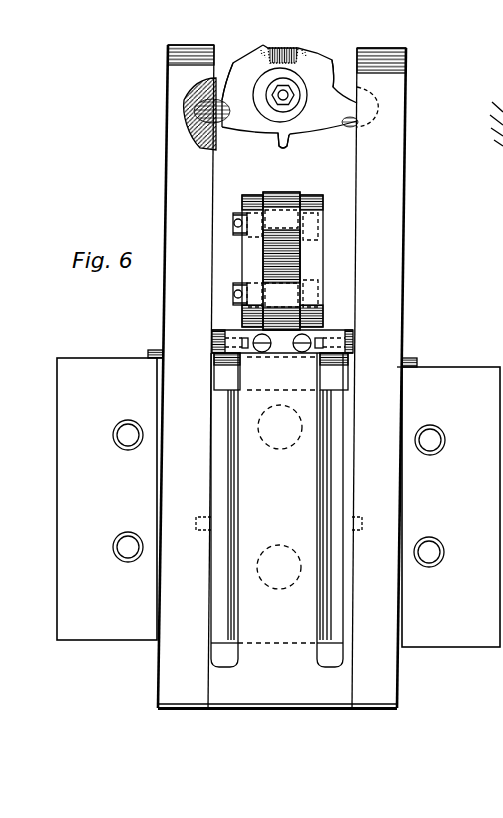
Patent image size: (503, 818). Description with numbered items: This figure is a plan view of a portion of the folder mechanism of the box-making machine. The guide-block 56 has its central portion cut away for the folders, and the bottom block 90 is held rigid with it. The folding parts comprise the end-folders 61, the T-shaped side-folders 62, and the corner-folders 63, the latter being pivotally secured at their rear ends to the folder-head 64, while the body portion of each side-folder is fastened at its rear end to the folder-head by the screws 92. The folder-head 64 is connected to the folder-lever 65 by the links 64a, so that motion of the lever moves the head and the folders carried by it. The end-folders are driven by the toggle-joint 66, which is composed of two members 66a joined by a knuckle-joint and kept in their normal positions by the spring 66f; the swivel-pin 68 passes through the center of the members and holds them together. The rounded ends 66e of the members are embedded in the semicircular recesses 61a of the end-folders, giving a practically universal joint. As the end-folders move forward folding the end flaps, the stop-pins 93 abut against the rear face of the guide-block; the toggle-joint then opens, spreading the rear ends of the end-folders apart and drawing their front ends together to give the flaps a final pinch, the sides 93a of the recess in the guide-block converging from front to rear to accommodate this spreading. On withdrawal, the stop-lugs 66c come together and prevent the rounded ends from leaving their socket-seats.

The guide-block 56 is at (60, 389).
The end-folders 61 is at (170, 168).
The semicircular recesses 61a is at (212, 100).
The side-folders 62 is at (317, 739).
The corner-folders 63 is at (207, 708).
The folder-head 64 is at (335, 336).
The links 64a is at (247, 258).
The folder-lever 65 is at (287, 222).
The toggle-joint 66 is at (318, 90).
The toggle members 66a is at (247, 54).
The stop-lugs 66c is at (283, 136).
The rounded ends 66e is at (202, 108).
The spring 66f is at (286, 45).
The swivel-pin 68 is at (290, 100).
The bottom block 90 is at (332, 632).
The screws 92 is at (300, 354).
The stop-pins 93 is at (152, 352).
The sides of the recess 93a is at (158, 372).